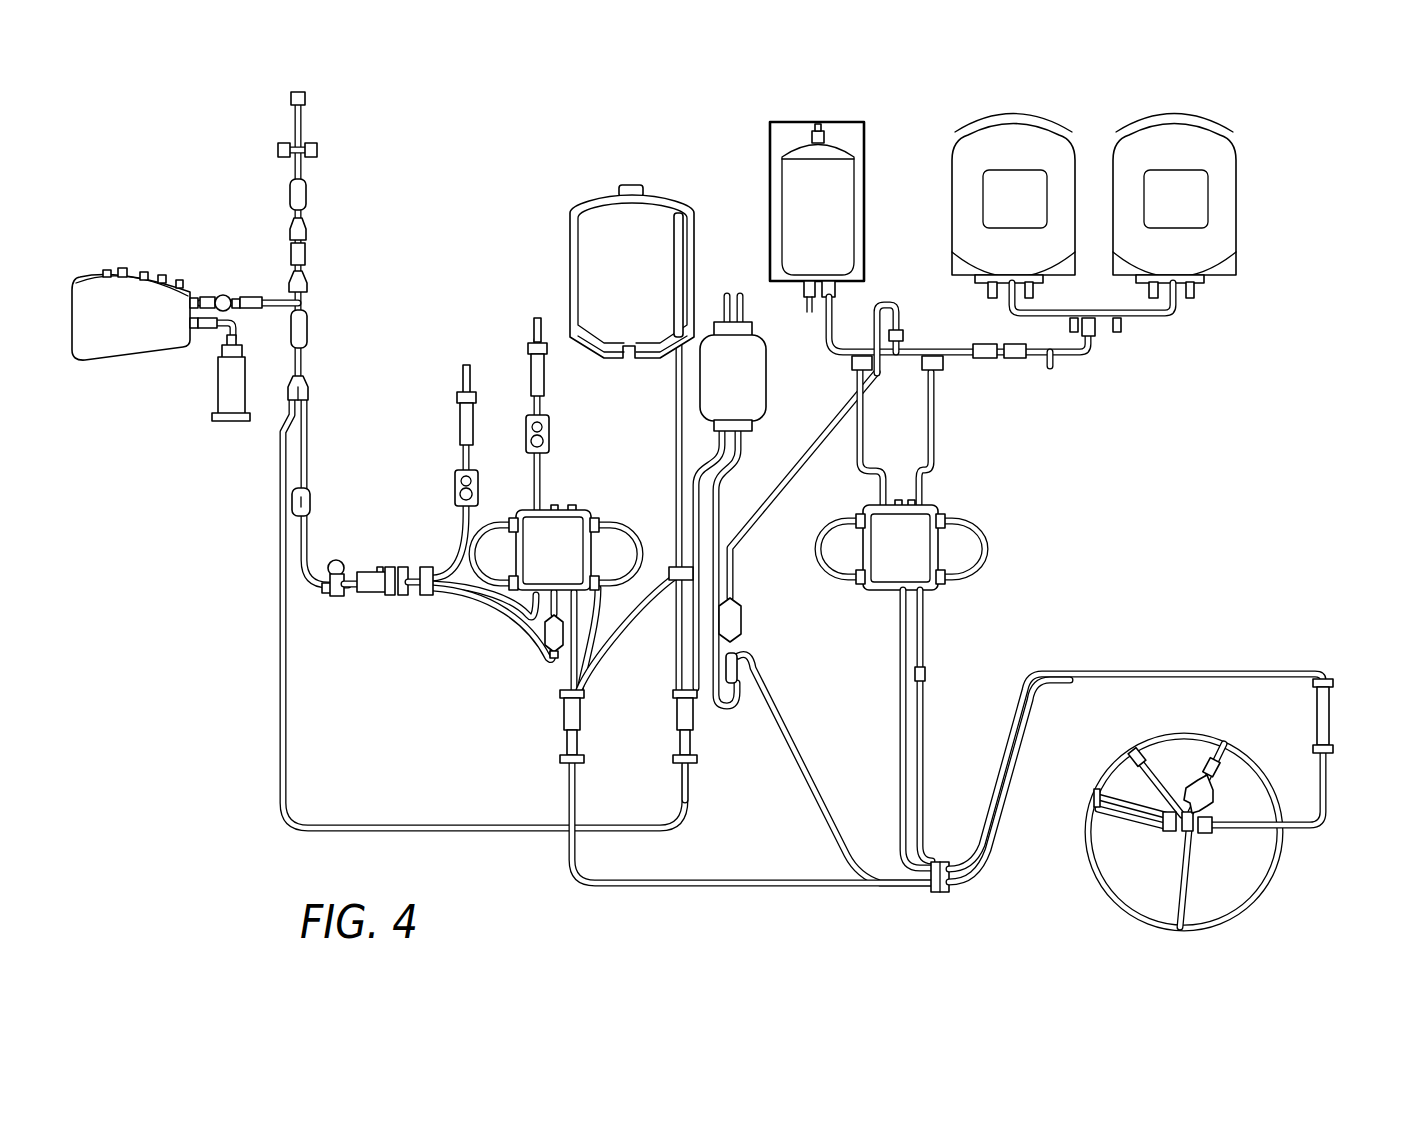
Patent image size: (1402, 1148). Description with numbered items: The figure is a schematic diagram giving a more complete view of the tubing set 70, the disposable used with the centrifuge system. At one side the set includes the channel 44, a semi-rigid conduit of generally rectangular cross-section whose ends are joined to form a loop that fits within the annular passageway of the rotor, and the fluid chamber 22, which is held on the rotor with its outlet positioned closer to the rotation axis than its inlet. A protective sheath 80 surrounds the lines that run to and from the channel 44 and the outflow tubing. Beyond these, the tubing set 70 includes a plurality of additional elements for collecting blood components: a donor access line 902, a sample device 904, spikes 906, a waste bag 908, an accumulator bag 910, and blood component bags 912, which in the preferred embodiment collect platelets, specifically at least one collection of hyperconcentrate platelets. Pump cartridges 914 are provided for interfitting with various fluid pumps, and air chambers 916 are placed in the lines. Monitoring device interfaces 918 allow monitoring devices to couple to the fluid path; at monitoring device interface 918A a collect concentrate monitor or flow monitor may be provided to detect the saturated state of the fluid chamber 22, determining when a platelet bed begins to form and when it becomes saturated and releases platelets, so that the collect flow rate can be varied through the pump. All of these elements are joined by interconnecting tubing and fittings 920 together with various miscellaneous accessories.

The fluid chamber 22 is at (1184, 790).
The channel 44 is at (1264, 902).
The tubing set 70 is at (1256, 238).
The protective sheath 80 is at (1334, 734).
The donor access line 902 is at (304, 167).
The sample device 904 is at (150, 352).
The spike 906 is at (475, 396).
The waste bag 908 is at (566, 224).
The accumulator bag 910 is at (703, 387).
The blood component bag 912 is at (1150, 123).
The pump cartridge 914 is at (497, 568).
The air chamber 916 is at (674, 722).
The monitoring device interface 918 is at (545, 634).
The monitoring device interface 918A is at (926, 673).
The interconnecting tubing and fittings 920 is at (888, 735).